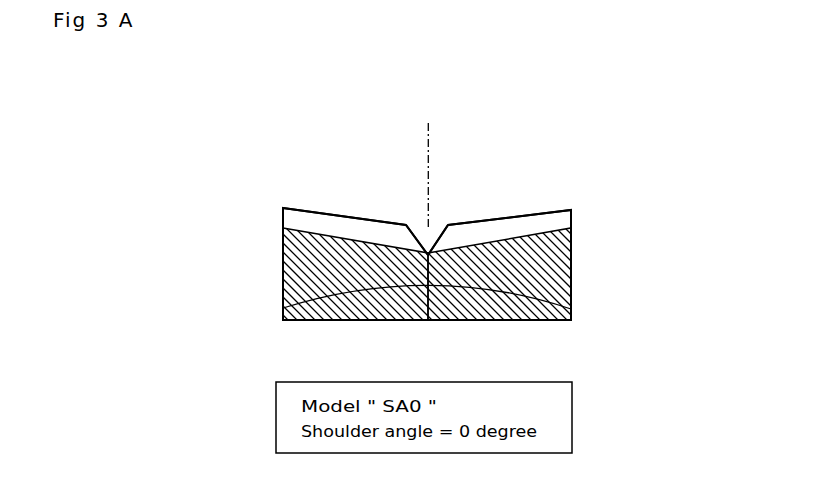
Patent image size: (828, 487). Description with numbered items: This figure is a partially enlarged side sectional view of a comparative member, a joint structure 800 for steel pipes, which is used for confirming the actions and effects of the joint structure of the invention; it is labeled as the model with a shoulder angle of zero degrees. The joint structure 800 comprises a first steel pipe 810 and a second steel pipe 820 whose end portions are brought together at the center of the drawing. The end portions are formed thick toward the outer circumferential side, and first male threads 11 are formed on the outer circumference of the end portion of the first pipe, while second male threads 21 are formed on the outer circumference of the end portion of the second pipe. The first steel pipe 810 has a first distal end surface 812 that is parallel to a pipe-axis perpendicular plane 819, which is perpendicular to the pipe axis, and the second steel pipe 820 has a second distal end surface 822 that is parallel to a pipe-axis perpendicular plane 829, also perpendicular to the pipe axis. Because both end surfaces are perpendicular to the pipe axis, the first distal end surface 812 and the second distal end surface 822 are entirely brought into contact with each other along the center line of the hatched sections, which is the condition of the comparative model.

The joint structure 800 is at (249, 116).
The first male threads 11 is at (283, 210).
The second male threads 21 is at (553, 215).
The pipe-axis perpendicular plane 819 is at (430, 142).
The pipe-axis perpendicular plane 829 is at (430, 168).
The first steel pipe 810 is at (283, 263).
The second steel pipe 820 is at (572, 262).
The first distal end surface 812 is at (283, 308).
The second distal end surface 822 is at (571, 308).